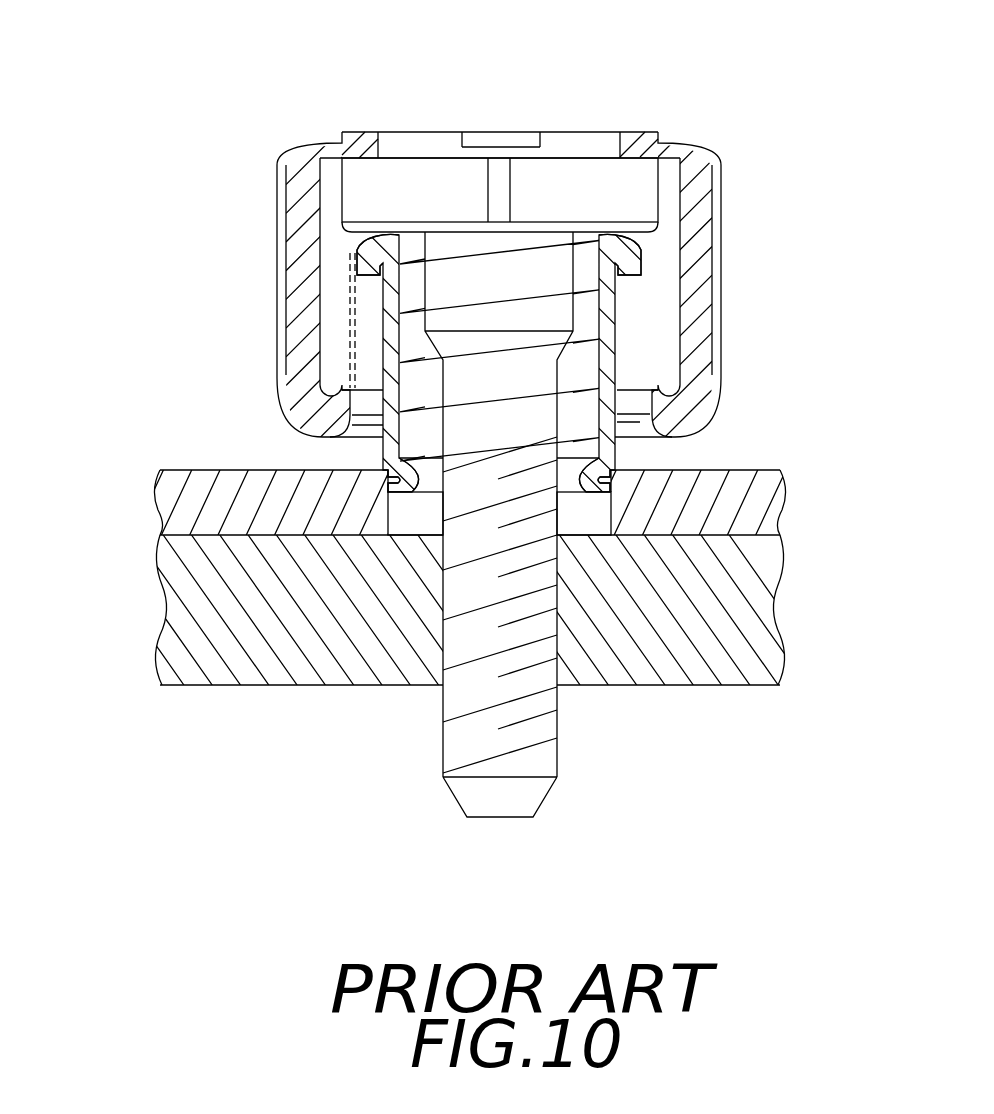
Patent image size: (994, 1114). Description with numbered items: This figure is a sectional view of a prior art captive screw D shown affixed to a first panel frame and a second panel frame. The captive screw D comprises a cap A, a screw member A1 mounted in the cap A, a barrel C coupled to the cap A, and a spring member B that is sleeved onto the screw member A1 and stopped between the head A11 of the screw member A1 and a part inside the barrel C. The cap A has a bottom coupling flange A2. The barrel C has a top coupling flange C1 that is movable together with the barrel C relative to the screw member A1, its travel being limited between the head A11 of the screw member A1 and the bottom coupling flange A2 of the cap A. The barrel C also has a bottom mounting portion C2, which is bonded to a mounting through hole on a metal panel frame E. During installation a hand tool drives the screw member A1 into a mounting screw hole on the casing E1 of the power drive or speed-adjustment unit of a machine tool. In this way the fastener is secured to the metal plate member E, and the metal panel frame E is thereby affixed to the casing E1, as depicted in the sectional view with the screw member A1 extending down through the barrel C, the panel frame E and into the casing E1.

The captive screw D is at (317, 118).
The cap A is at (698, 270).
The screw member A1 is at (444, 745).
The head A11 is at (575, 178).
The bottom coupling flange A2 is at (655, 408).
The spring member B is at (580, 385).
The barrel C is at (392, 330).
The top coupling flange C1 is at (357, 250).
The bottom mounting portion C2 is at (598, 490).
The metal panel frame E is at (178, 513).
The casing E1 is at (165, 573).